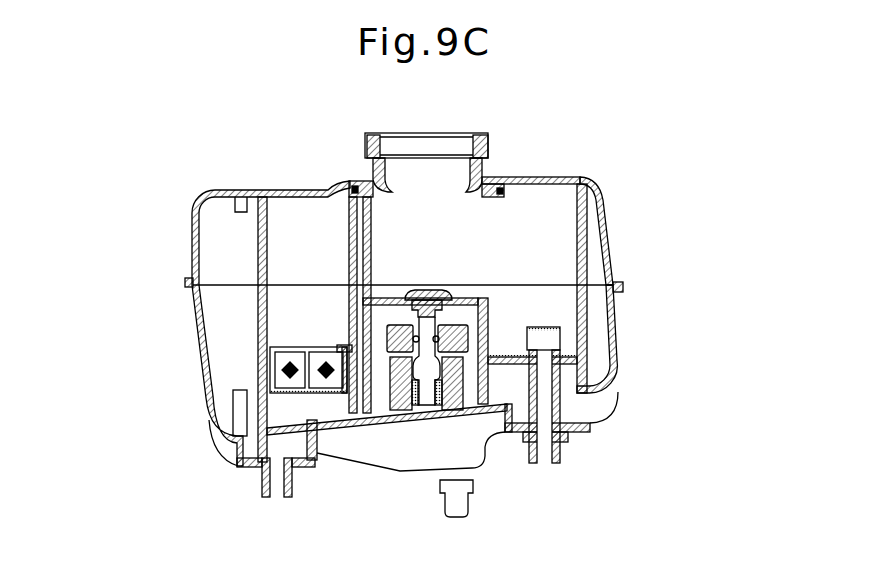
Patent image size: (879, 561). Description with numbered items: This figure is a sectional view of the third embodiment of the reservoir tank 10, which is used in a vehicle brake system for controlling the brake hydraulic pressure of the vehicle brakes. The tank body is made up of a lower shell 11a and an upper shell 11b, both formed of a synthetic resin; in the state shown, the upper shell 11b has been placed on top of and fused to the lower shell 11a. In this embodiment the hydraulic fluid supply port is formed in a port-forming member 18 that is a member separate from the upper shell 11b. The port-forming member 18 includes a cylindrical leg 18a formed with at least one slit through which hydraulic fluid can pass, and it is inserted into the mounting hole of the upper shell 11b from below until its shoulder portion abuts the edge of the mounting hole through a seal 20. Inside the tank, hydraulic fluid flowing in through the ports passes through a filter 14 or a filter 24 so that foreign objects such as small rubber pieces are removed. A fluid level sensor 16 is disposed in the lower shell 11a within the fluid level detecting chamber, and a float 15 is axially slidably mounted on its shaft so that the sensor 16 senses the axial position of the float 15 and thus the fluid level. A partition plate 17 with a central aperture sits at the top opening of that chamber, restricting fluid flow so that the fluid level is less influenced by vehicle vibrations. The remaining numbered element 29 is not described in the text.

The reservoir tank 10 is at (190, 250).
The lower shell 11a is at (618, 367).
The upper shell 11b is at (609, 233).
The filter 14 is at (265, 372).
The float 15 is at (468, 402).
The fluid level sensor 16 is at (427, 372).
The partition plate 17 is at (467, 300).
The port-forming member 18 is at (427, 135).
The cylindrical leg 18a is at (370, 240).
The seal 20 is at (357, 183).
The filter 24 is at (560, 312).
The floor plate 29 is at (367, 414).